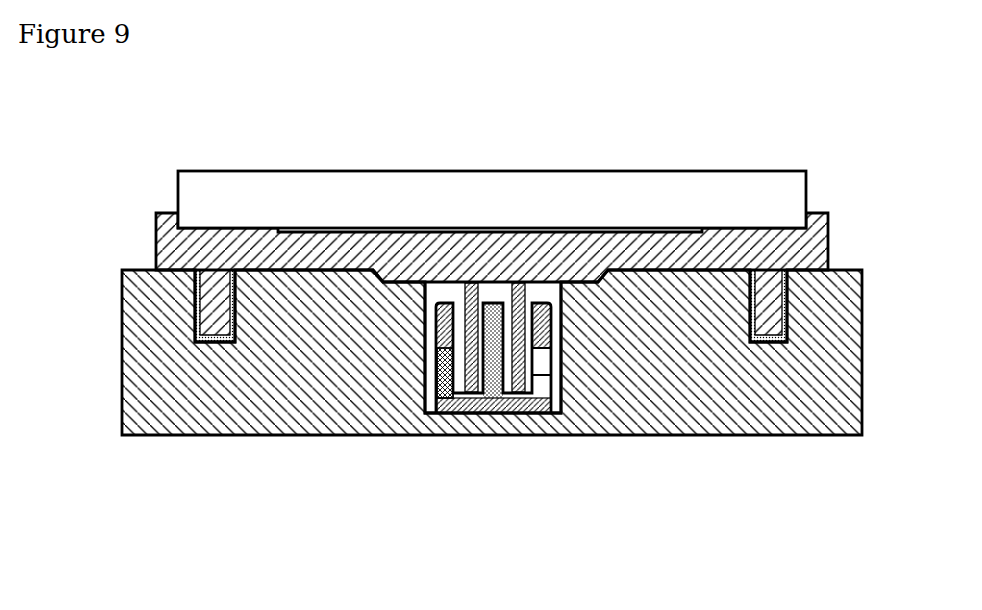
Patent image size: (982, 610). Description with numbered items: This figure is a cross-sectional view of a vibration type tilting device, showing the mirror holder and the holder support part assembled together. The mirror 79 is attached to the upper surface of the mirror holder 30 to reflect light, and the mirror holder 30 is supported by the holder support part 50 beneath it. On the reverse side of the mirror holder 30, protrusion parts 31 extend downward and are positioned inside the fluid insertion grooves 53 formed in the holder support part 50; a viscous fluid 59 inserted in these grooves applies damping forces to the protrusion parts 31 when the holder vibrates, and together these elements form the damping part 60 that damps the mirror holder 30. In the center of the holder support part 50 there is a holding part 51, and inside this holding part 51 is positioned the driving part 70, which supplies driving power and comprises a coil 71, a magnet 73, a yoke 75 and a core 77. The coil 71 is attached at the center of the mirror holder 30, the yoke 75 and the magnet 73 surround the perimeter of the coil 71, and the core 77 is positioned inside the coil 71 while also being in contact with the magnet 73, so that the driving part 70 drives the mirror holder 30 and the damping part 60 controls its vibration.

The mirror holder 30 is at (166, 246).
The protrusion parts 31 is at (212, 312).
The holder support part 50 is at (817, 413).
The holding part 51 is at (561, 354).
The fluid insertion grooves 53 is at (222, 338).
The viscous fluid 59 is at (222, 342).
The damping part 60 is at (491, 415).
The driving part 70 is at (502, 431).
The coil 71 is at (467, 398).
The magnet 73 is at (549, 366).
The yoke 75 is at (437, 344).
The core 77 is at (505, 404).
The mirror 79 is at (283, 178).